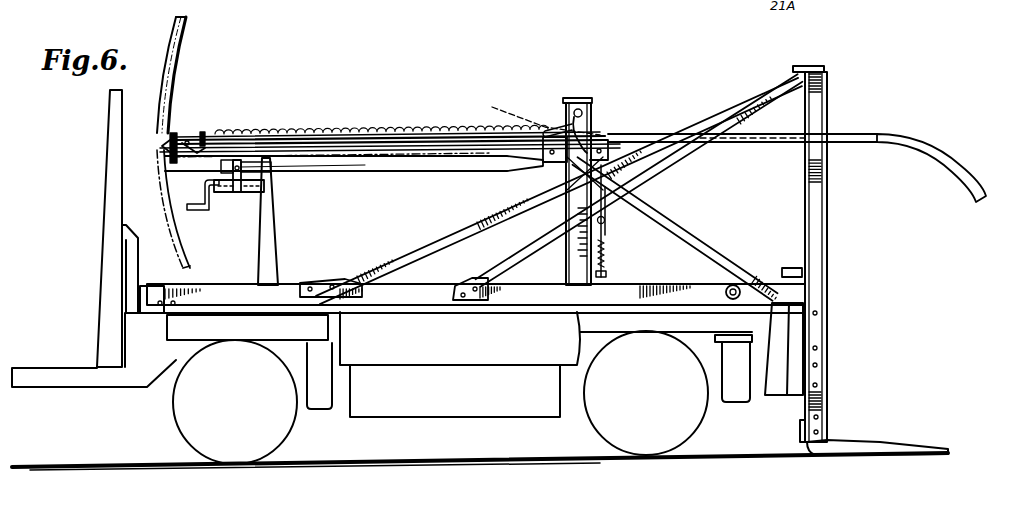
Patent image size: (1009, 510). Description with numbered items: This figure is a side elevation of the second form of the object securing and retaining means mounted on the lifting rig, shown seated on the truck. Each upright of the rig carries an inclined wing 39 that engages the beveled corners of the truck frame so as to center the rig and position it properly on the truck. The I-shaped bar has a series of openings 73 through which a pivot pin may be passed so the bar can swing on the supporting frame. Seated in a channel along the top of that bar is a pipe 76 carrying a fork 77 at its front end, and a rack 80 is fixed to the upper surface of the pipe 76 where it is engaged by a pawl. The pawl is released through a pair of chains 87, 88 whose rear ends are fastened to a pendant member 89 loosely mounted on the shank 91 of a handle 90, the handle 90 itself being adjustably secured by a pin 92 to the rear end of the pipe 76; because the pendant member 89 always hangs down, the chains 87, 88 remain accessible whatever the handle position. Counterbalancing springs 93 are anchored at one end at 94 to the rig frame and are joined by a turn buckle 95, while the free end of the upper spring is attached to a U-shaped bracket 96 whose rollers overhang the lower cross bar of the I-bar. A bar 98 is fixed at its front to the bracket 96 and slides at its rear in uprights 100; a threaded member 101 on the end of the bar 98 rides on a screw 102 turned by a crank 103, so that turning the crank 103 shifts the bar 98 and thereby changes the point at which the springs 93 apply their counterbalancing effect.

The wing 39 is at (780, 340).
The openings 73 is at (558, 128).
The pipe 76 is at (445, 140).
The fork 77 is at (910, 140).
The rack 80 is at (403, 131).
The chain 87 is at (492, 107).
The chain 88 is at (490, 153).
The pendant member 89 is at (170, 162).
The handle 90 is at (174, 76).
The shank 91 is at (182, 140).
The pin 92 is at (200, 137).
The counterbalancing springs 93 is at (608, 251).
The spring anchoring point 94 is at (607, 278).
The turn buckle 95 is at (622, 216).
The U-shaped bracket 96 is at (634, 138).
The bar 98 is at (400, 166).
The uprights 100 is at (270, 240).
The threaded member 101 is at (237, 189).
The screw 102 is at (251, 193).
The crank 103 is at (208, 212).